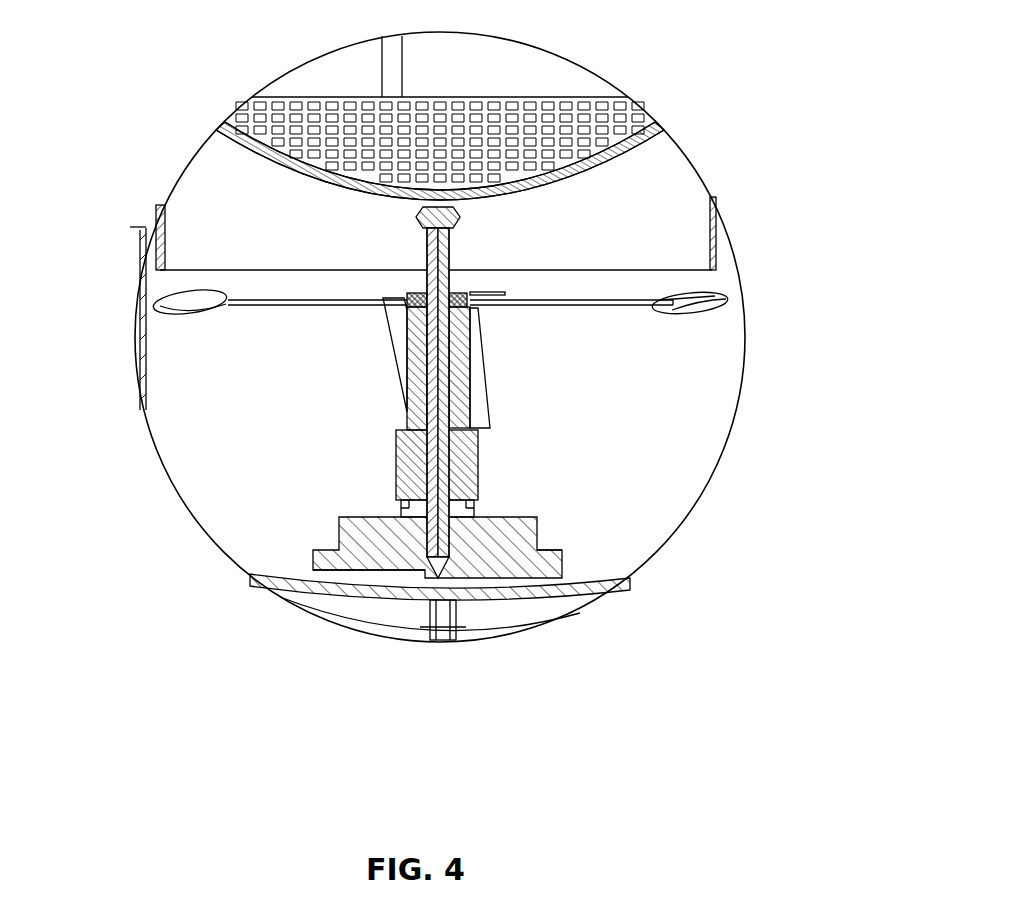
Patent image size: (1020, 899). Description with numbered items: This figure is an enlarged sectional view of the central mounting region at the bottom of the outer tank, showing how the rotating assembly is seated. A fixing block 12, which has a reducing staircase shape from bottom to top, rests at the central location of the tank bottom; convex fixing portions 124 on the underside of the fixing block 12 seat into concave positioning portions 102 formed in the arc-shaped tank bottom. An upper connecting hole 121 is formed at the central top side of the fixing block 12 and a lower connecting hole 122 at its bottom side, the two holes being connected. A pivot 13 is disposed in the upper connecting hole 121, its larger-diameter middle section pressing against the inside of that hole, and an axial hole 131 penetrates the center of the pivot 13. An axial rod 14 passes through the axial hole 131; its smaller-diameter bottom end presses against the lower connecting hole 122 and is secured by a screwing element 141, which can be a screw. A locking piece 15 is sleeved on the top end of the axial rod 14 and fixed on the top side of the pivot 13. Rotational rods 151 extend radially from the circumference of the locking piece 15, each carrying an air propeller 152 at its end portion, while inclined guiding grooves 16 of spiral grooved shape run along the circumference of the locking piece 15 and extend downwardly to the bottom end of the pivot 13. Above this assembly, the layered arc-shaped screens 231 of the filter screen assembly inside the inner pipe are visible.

The arc-shaped screen 231 is at (523, 120).
The axial rod 14 is at (559, 419).
The locking piece 15 is at (478, 268).
The rotational rod 151 is at (607, 302).
The air propeller 152 is at (687, 304).
The axial hole 131 is at (468, 368).
The inclined guiding groove 16 is at (402, 323).
The pivot 13 is at (478, 460).
The upper connecting hole 121 is at (500, 515).
The fixing block 12 is at (525, 591).
The convex fixing portion 124 is at (560, 568).
The lower connecting hole 122 is at (438, 573).
The concave positioning portion 102 is at (500, 596).
The screwing element 141 is at (437, 582).